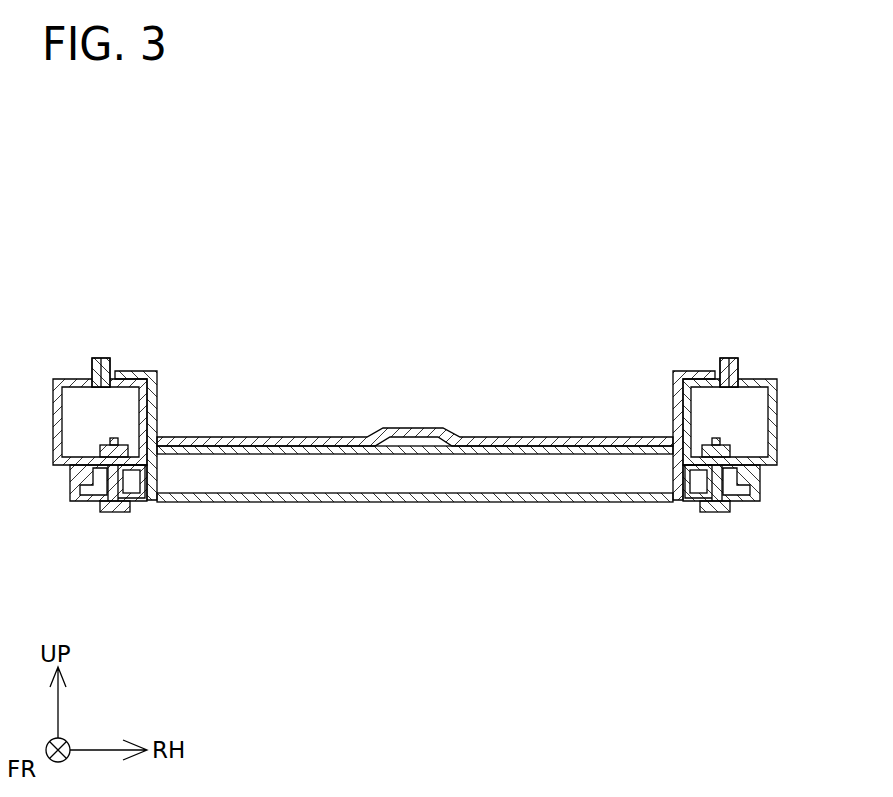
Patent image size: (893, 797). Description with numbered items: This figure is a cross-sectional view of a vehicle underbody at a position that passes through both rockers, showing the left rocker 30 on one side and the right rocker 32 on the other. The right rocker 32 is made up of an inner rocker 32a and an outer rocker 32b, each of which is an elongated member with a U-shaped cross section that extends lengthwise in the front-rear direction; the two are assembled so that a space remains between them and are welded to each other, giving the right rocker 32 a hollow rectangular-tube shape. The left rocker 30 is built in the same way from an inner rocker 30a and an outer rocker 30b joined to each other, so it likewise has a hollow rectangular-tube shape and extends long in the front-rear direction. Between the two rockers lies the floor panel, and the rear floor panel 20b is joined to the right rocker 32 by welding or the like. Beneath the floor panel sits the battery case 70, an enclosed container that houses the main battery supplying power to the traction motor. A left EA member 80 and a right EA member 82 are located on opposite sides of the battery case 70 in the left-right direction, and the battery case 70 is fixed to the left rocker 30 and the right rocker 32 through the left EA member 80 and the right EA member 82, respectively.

The left rocker 30 is at (104, 415).
The inner rocker 30a is at (133, 398).
The outer rocker 30b is at (80, 383).
The right rocker 32 is at (722, 415).
The inner rocker 32a is at (696, 398).
The outer rocker 32b is at (750, 383).
The rear floor panel 20b is at (278, 437).
The battery case 70 is at (453, 502).
The left EA member 80 is at (143, 500).
The right EA member 82 is at (687, 500).